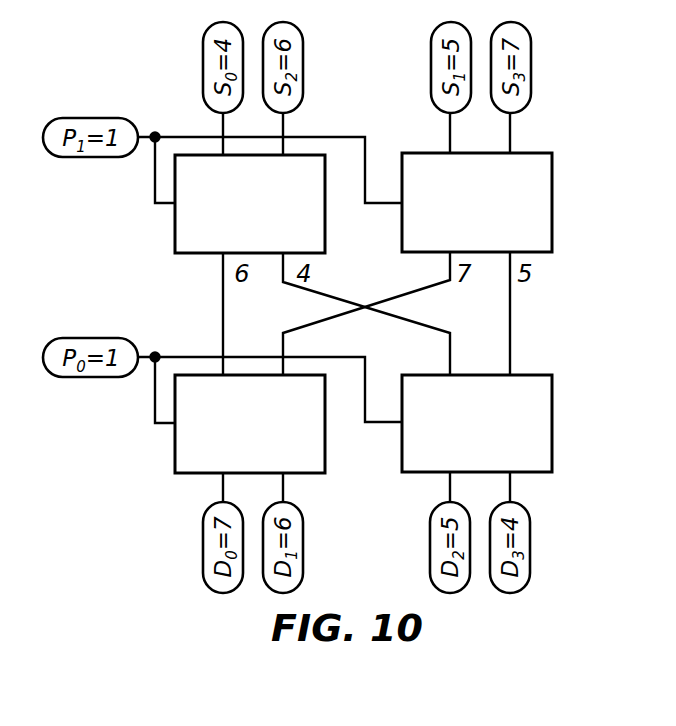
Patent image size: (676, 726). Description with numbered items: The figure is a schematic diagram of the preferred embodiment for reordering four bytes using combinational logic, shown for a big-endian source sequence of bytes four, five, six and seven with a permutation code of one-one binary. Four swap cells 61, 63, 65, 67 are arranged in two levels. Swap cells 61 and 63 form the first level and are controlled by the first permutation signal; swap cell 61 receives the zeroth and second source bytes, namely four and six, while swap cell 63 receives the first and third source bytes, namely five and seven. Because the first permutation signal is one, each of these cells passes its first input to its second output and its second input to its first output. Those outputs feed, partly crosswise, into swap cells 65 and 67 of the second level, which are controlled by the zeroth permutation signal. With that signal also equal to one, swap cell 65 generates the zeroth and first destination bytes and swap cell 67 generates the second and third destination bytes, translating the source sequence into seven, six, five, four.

The swap cell 61 is at (175, 225).
The swap cell 63 is at (552, 200).
The swap cell 65 is at (175, 448).
The swap cell 67 is at (552, 422).